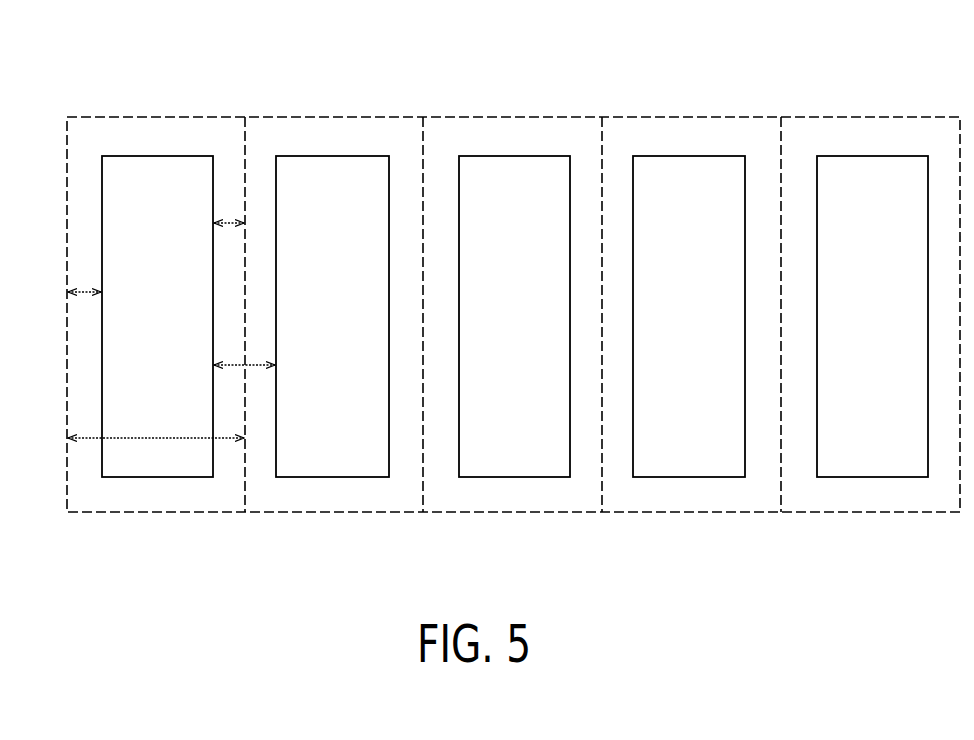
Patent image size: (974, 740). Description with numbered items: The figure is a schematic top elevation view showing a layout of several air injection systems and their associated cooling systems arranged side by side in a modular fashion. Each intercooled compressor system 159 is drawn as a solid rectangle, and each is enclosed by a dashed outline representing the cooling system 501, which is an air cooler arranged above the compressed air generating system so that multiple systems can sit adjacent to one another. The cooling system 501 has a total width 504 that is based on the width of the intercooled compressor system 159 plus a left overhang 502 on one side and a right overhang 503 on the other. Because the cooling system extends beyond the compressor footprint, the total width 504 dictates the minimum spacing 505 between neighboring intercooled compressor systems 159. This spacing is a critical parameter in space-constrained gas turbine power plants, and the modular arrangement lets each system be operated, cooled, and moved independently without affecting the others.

The intercooled compressor system 159 is at (162, 135).
The cooling system 501 is at (198, 94).
The left overhang 502 is at (94, 291).
The right overhang 503 is at (229, 221).
The total width 504 is at (84, 437).
The minimum spacing 505 is at (230, 364).